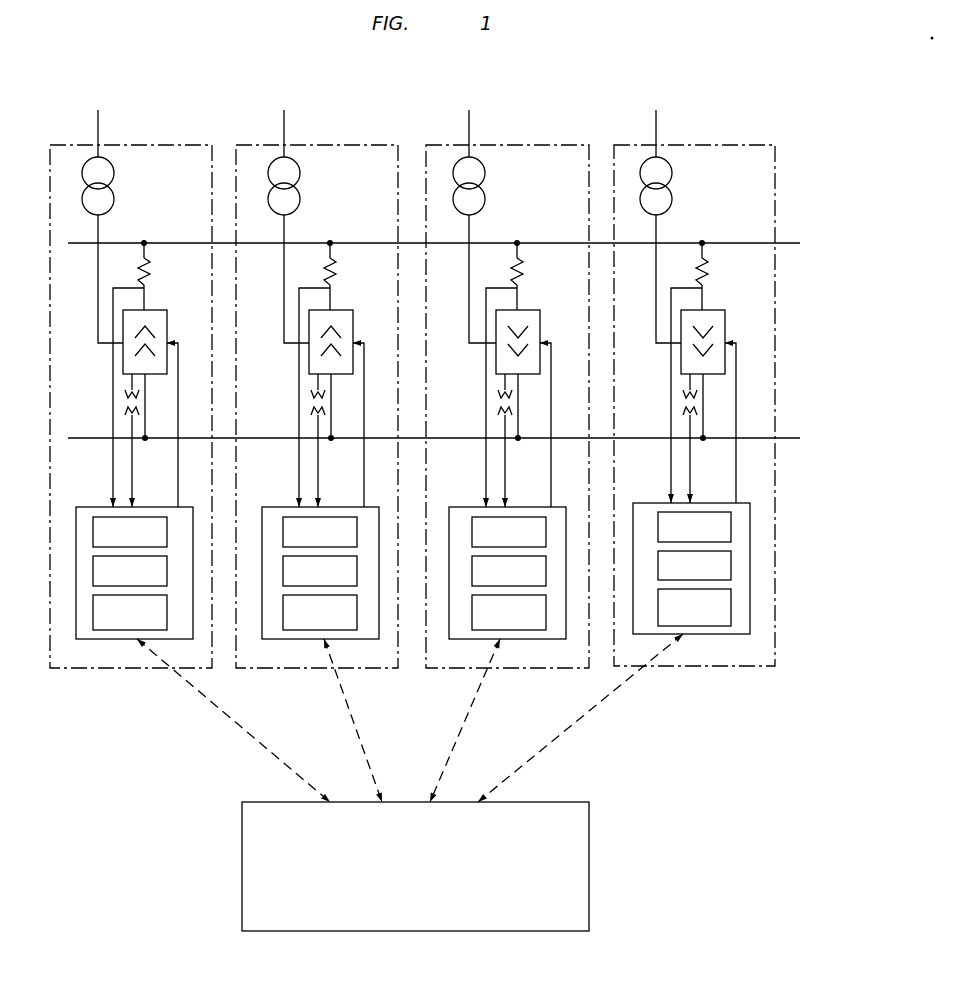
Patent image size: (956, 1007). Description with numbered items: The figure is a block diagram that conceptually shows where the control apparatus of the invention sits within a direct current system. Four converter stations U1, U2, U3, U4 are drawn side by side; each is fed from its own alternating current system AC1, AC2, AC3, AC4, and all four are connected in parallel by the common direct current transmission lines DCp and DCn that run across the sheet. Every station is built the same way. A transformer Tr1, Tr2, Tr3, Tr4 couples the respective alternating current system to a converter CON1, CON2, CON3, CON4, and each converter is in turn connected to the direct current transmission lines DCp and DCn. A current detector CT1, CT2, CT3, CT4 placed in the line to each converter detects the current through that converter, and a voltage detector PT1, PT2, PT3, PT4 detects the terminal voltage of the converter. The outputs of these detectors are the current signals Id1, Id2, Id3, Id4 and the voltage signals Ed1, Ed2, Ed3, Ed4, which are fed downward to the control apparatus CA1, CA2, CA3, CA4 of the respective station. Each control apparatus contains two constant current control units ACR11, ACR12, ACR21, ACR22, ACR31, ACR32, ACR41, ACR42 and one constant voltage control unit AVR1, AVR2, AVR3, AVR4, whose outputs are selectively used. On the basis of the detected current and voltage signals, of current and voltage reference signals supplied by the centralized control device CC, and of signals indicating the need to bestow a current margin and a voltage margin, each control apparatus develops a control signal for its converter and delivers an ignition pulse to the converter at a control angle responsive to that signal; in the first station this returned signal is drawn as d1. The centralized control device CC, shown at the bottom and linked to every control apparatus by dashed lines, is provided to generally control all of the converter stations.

The converter station U1 is at (154, 146).
The converter station U2 is at (340, 146).
The converter station U3 is at (530, 146).
The converter station U4 is at (690, 145).
The alternating current system AC1 is at (97, 125).
The alternating current system AC2 is at (283, 125).
The alternating current system AC3 is at (469, 121).
The alternating current system AC4 is at (656, 121).
The transformer Tr1 is at (115, 186).
The transformer Tr2 is at (301, 186).
The transformer Tr3 is at (486, 186).
The transformer Tr4 is at (673, 186).
The current detector CT1 is at (149, 275).
The current detector CT2 is at (335, 275).
The current detector CT3 is at (522, 275).
The current detector CT4 is at (707, 275).
The converter CON1 is at (166, 296).
The converter CON2 is at (352, 296).
The converter CON3 is at (539, 296).
The converter CON4 is at (724, 296).
The voltage detector PT1 is at (122, 402).
The voltage detector PT2 is at (308, 402).
The voltage detector PT3 is at (495, 402).
The voltage detector PT4 is at (680, 402).
The current signal Id1 is at (114, 397).
The current signal Id2 is at (300, 397).
The current signal Id3 is at (487, 397).
The current signal Id4 is at (672, 395).
The voltage signal Ed1 is at (148, 461).
The voltage signal Ed2 is at (334, 461).
The voltage signal Ed3 is at (521, 461).
The voltage signal Ed4 is at (706, 459).
The control angle signal 1 d1 is at (184, 423).
The control apparatus CA1 is at (126, 588).
The control apparatus CA2 is at (312, 588).
The control apparatus CA3 is at (499, 588).
The control apparatus CA4 is at (699, 584).
The constant current control unit ACR11 is at (130, 532).
The constant current control unit ACR12 is at (130, 571).
The constant voltage control unit AVR1 is at (130, 612).
The constant current control unit ACR21 is at (320, 532).
The constant current control unit ACR22 is at (320, 571).
The constant voltage control unit AVR2 is at (320, 612).
The constant current control unit ACR31 is at (509, 532).
The constant current control unit ACR32 is at (509, 571).
The constant voltage control unit AVR3 is at (509, 612).
The constant current control unit ACR41 is at (694, 527).
The constant current control unit ACR42 is at (694, 566).
The constant voltage control unit AVR4 is at (694, 607).
The direct current transmission line DCp is at (786, 243).
The direct current transmission line DCn is at (786, 438).
The centralized control device CC is at (590, 843).